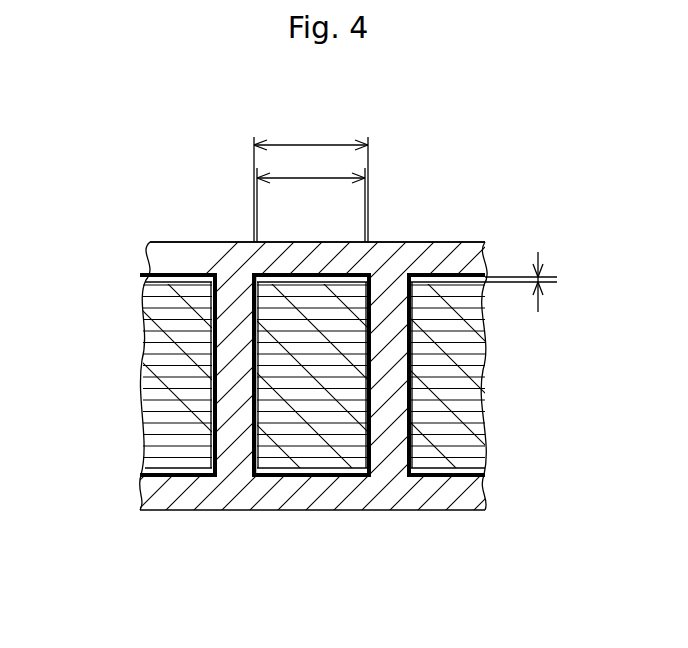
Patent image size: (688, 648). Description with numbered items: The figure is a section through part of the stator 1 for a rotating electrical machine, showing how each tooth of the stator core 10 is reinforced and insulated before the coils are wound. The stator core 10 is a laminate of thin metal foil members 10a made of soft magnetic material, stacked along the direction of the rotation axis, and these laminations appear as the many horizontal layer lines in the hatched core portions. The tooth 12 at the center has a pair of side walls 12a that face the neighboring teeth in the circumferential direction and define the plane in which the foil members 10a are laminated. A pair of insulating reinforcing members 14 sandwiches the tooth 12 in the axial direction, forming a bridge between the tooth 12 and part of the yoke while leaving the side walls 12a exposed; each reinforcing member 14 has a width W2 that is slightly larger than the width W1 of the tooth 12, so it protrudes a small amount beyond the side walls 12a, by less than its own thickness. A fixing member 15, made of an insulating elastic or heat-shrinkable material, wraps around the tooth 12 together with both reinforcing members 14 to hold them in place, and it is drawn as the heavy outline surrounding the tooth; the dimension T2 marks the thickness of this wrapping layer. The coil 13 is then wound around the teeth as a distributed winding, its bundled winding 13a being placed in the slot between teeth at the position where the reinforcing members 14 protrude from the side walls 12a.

The stator for rotating electrical machine 1 is at (176, 155).
The stator core 10 is at (128, 418).
The foil member 10a is at (483, 442).
The tooth 12 is at (295, 440).
The side wall 12a is at (216, 507).
The coil 13 is at (312, 505).
The winding 13a is at (198, 247).
The reinforcing member 14 is at (300, 252).
The fixing member 15 is at (376, 476).
The width of tooth W1 is at (312, 177).
The width of reinforcing member W2 is at (280, 142).
The thickness T2 is at (538, 277).